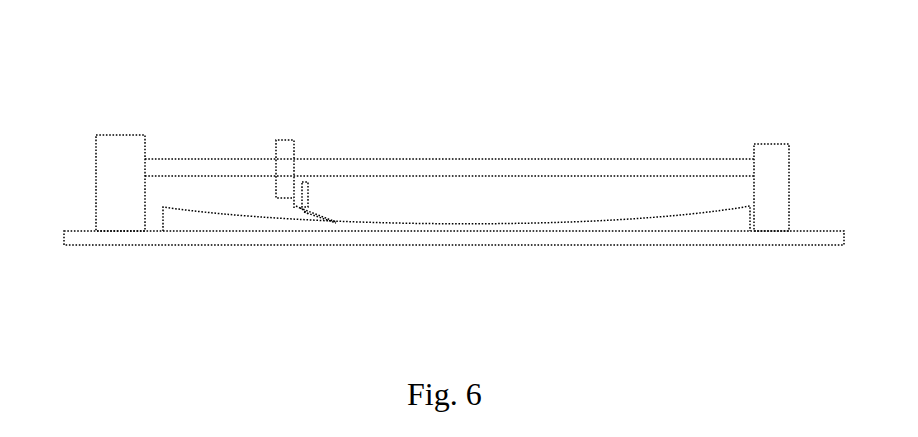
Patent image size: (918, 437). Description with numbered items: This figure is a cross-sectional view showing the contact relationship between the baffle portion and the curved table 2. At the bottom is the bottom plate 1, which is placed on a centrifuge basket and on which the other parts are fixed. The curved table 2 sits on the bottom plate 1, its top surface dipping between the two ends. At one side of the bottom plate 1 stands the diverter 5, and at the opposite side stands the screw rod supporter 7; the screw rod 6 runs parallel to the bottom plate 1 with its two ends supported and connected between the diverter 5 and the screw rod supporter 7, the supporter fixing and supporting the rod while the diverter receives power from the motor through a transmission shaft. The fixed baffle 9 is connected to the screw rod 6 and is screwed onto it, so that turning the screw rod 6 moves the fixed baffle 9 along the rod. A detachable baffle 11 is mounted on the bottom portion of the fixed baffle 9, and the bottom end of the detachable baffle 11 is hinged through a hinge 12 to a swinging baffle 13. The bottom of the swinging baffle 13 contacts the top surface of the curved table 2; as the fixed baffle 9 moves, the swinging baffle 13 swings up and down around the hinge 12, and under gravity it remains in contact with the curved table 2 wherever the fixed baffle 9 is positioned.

The bottom plate 1 is at (157, 242).
The curved table 2 is at (455, 226).
The diverter 5 is at (122, 186).
The screw rod 6 is at (523, 158).
The screw rod supporter 7 is at (773, 156).
The fixed baffle 9 is at (290, 140).
The detachable baffle 11 is at (306, 183).
The hinge 12 is at (302, 213).
The swinging baffle 13 is at (323, 219).